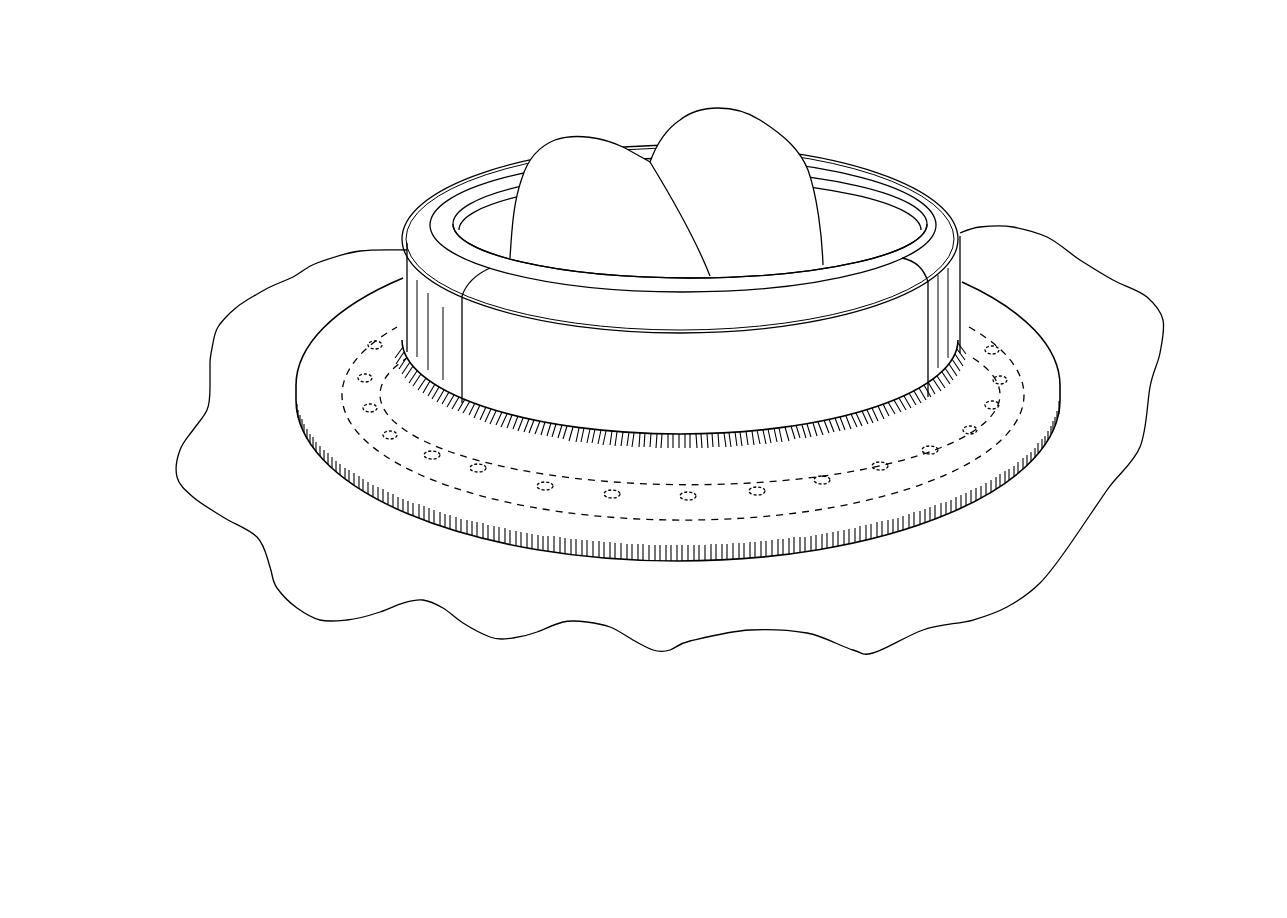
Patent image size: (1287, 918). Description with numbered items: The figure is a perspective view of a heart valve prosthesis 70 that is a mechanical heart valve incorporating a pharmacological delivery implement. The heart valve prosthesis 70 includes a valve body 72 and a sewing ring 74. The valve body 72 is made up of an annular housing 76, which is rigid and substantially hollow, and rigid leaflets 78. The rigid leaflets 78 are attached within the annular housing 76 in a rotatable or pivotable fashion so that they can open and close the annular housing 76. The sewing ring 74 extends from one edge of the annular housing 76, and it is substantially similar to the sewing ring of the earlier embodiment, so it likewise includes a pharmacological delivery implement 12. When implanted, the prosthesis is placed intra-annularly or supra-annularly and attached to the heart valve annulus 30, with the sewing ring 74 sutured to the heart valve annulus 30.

The pharmacological delivery implement 12 is at (1048, 401).
The heart valve annulus 30 is at (1043, 484).
The heart valve prosthesis 70 is at (434, 88).
The valve body 72 is at (950, 220).
The sewing ring 74 is at (967, 480).
The annular housing 76 is at (423, 243).
The rigid leaflets 78 is at (563, 167).